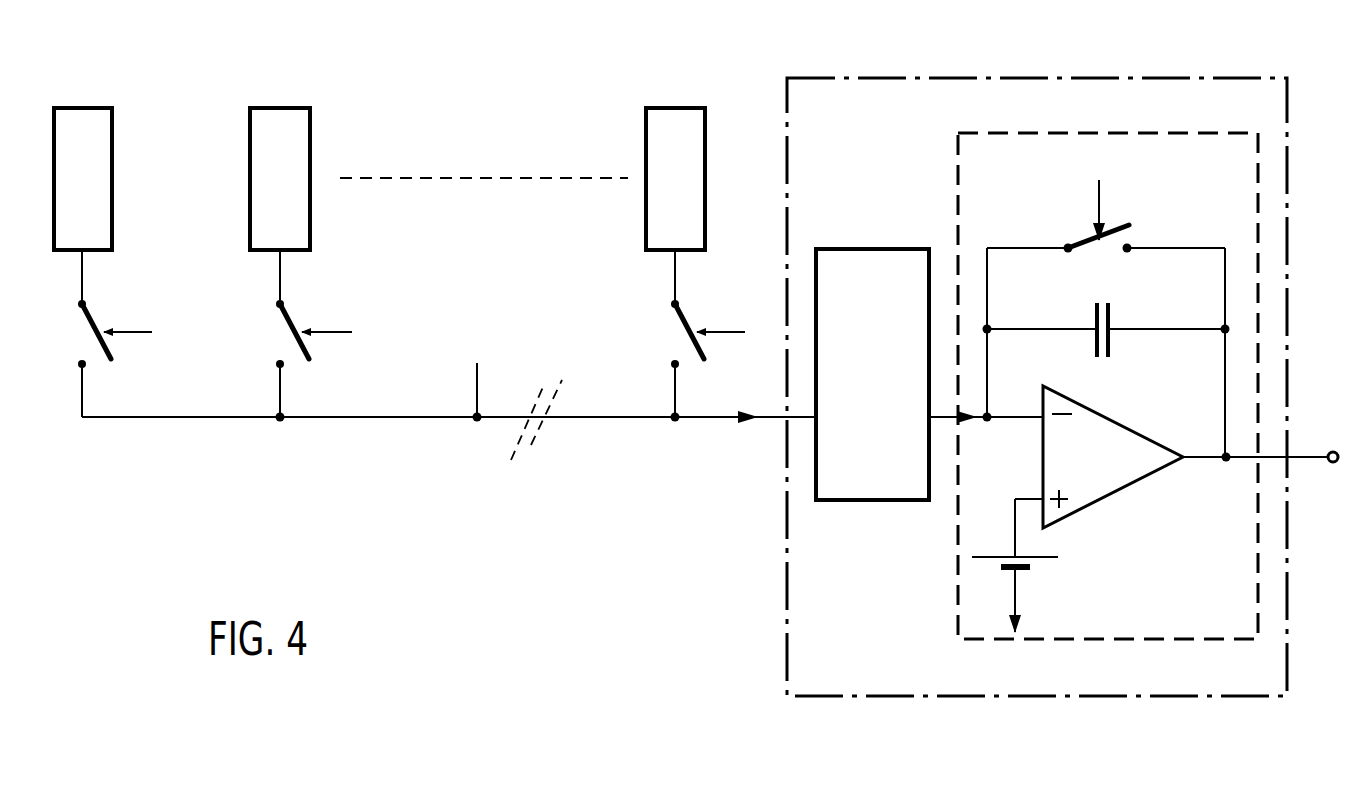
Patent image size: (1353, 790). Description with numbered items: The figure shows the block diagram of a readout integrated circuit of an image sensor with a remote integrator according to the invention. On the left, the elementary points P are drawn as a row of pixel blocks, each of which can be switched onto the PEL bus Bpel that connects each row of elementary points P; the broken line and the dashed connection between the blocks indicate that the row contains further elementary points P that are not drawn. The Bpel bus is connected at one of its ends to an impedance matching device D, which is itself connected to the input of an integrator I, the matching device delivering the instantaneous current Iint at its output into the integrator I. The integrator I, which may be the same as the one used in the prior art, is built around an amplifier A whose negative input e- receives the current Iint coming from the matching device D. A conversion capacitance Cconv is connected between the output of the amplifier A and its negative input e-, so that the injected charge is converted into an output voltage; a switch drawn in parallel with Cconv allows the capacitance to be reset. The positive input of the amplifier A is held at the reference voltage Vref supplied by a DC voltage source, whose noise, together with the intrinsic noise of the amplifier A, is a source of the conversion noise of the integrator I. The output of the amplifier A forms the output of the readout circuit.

The elementary point P is at (90, 195).
The PEL bus Bpel is at (352, 419).
The impedance matching device D is at (882, 394).
The instantaneous current at the output of the matching device Iint is at (986, 433).
The integrator I is at (958, 603).
The amplifier A is at (1098, 472).
The conversion capacitance Cconv is at (1110, 350).
The reference voltage Vref is at (1033, 565).
The negative input of amplifier e- is at (1036, 396).